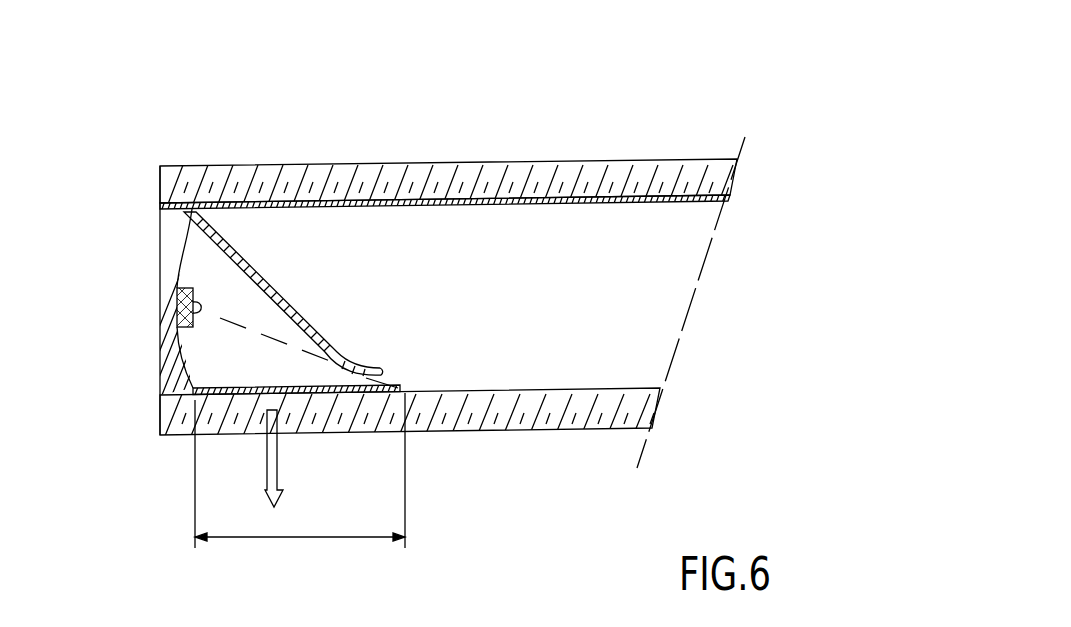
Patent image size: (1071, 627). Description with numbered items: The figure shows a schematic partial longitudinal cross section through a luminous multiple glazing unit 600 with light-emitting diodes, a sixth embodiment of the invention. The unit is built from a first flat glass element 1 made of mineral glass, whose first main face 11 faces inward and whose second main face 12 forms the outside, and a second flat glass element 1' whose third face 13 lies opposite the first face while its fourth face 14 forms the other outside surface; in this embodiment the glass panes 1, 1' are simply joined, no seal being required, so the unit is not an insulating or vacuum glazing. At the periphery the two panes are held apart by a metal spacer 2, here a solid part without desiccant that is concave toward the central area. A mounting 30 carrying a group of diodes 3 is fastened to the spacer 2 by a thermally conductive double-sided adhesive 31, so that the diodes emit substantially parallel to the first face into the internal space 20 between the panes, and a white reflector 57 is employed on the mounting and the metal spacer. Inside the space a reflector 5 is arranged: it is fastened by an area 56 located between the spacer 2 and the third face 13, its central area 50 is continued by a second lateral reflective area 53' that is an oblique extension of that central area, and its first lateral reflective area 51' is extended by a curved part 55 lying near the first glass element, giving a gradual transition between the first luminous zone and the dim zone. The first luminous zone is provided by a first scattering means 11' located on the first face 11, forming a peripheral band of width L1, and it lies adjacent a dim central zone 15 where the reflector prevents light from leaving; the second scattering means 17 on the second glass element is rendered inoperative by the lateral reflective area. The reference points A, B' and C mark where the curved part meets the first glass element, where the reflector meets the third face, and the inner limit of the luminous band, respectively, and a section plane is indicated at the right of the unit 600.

The luminous multiple glazing unit 600 is at (705, 130).
The first flat glass element 1 is at (497, 449).
The second flat glass element 1' is at (550, 122).
The spacer 2 is at (178, 248).
The light-emitting diodes 3 is at (203, 314).
The reflector 5 is at (287, 298).
The first main face 11 is at (451, 391).
The first scattering means 11' is at (299, 436).
The second main face 12 is at (567, 433).
The third face 13 is at (714, 194).
The fourth face 14 is at (660, 160).
The dim central zone 15 is at (505, 206).
The second scattering means 17 is at (465, 200).
The light channel 20 is at (587, 253).
The mounting 30 is at (177, 296).
The thermally conductive double-sided adhesive 31 is at (193, 306).
The central area of the reflector 50 is at (280, 294).
The first lateral reflective area 51' is at (372, 321).
The second lateral reflective area 53' is at (243, 160).
The curved part 55 is at (382, 365).
The fastening area 56 is at (172, 210).
The white reflector 57 is at (175, 313).
The point A is at (352, 376).
The point B' is at (205, 165).
The point C is at (406, 394).
The width of the first luminous zone L1 is at (300, 482).